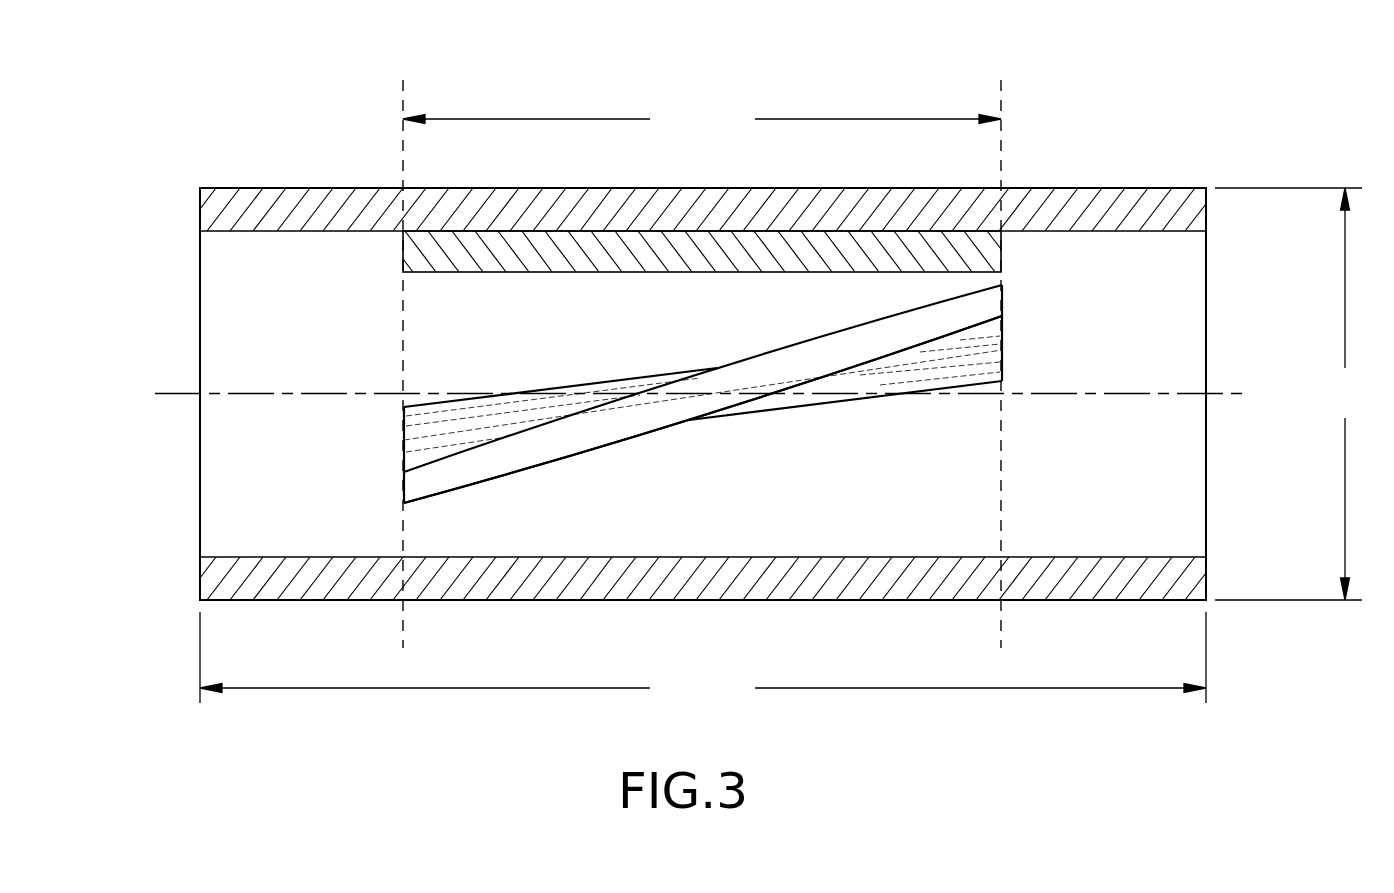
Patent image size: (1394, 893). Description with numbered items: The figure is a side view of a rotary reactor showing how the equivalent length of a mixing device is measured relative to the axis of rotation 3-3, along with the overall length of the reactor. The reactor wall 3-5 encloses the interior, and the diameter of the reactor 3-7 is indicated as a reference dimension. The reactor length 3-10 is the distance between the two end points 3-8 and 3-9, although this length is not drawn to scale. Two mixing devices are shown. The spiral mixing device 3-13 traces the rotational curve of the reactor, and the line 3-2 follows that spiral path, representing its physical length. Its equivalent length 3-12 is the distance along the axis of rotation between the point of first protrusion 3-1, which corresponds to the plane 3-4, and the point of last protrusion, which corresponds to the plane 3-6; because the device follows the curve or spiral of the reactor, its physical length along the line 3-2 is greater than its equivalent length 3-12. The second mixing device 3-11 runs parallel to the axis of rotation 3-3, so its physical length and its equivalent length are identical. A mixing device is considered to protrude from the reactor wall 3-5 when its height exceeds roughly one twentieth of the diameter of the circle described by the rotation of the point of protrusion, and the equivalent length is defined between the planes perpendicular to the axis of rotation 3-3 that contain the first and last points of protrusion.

The point of first protrusion 3-1 is at (400, 408).
The line tracing the spiral mixing device 3-2 is at (791, 363).
The axis of rotation 3-3 is at (168, 390).
The plane of first protrusion 3-4 is at (404, 349).
The reactor wall 3-5 is at (280, 192).
The plane of last protrusion 3-6 is at (1002, 349).
The diameter of the reactor 3-7 is at (1293, 394).
The reactor end point 3-8 is at (202, 675).
The reactor end point 3-9 is at (1205, 675).
The reactor length 3-10 is at (703, 689).
The second mixing device 3-11 is at (1004, 260).
The equivalent length of the spiral mixing device 3-12 is at (702, 124).
The spiral mixing device 3-13 is at (586, 451).